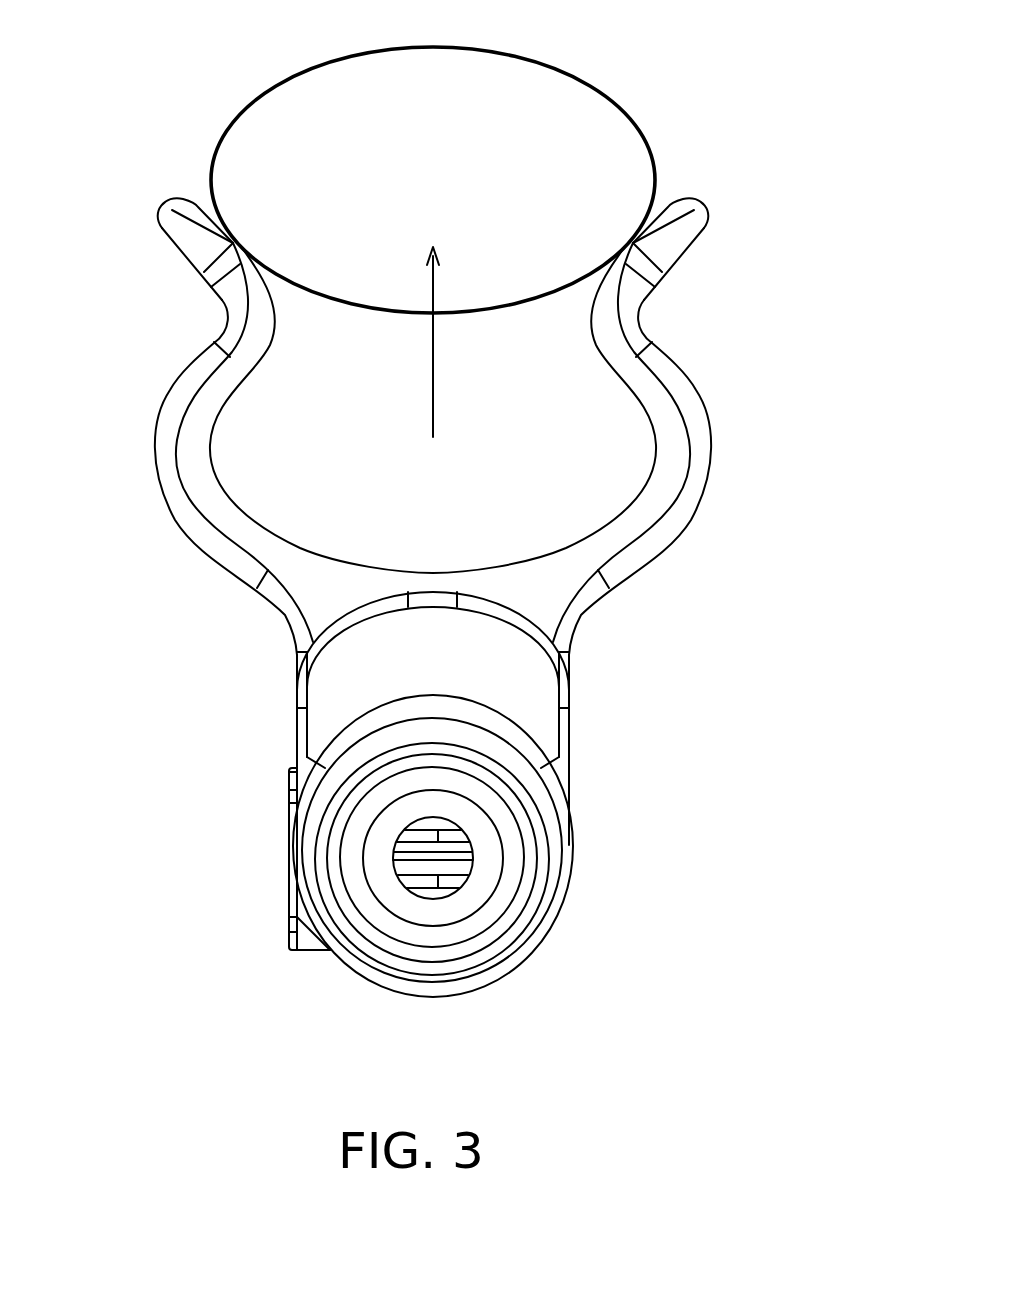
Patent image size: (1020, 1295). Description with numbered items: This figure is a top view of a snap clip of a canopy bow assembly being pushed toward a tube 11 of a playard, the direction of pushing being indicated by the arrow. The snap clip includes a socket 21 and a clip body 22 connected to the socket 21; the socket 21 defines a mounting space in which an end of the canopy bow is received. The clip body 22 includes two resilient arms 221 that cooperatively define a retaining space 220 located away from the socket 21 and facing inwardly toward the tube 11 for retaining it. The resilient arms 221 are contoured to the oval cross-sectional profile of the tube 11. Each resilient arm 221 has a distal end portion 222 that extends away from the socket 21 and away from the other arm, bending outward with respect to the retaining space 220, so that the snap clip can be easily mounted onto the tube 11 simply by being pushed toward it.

The tube 11 is at (585, 80).
The socket 21 is at (553, 887).
The clip body 22 is at (552, 590).
The retaining space 220 is at (572, 485).
The resilient arms 221 is at (188, 480).
The distal end portion 222 is at (188, 247).